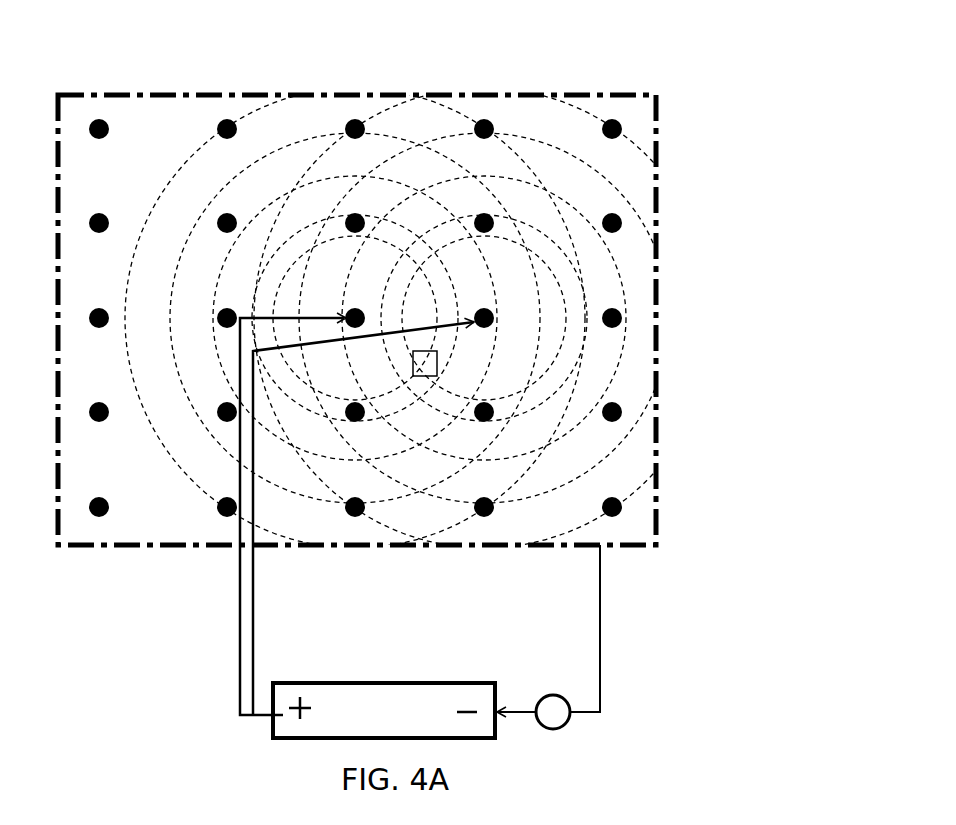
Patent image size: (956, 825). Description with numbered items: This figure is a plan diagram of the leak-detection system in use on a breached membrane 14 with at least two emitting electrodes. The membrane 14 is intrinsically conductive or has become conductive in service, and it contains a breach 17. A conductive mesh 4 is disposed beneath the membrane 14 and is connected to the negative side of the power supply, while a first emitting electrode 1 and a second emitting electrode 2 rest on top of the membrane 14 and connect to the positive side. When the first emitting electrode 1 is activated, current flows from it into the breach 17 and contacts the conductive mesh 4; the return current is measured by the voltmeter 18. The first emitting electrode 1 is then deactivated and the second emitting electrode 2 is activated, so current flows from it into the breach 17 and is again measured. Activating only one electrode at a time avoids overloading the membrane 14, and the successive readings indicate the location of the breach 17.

The first emitting electrode 1 is at (345, 310).
The second emitting electrode 2 is at (472, 317).
The conductive mesh 4 is at (92, 550).
The membrane 14 is at (580, 180).
The breach 17 is at (427, 378).
The voltmeter 18 is at (572, 720).